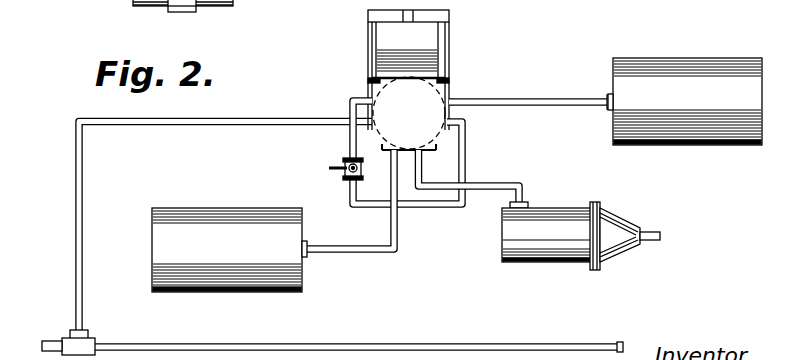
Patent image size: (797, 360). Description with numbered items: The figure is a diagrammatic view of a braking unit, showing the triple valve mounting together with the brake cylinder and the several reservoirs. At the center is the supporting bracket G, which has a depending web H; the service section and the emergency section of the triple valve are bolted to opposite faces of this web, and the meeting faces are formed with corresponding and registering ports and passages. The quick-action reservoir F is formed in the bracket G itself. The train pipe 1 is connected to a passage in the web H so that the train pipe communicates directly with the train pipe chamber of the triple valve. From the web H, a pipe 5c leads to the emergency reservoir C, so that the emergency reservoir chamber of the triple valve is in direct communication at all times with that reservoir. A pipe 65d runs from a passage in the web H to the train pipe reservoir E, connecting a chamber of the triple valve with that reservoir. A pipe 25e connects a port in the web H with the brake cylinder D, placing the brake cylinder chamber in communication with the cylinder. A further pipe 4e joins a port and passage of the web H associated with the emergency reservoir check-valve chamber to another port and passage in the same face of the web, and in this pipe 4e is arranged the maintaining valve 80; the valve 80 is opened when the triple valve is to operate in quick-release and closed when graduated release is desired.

The train pipe 1 is at (243, 118).
The pipe 4e is at (352, 100).
The pipe 5c is at (400, 244).
The pipe 25e is at (528, 186).
The pipe 65d is at (560, 90).
The maintaining valve 80 is at (340, 170).
The emergency reservoir C is at (219, 225).
The brake cylinder D is at (552, 270).
The train pipe reservoir E is at (688, 68).
The quick-action reservoir F is at (408, 52).
The supporting bracket G is at (450, 25).
The depending web H is at (450, 90).